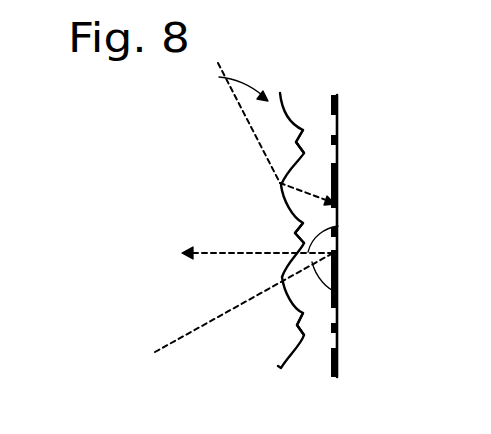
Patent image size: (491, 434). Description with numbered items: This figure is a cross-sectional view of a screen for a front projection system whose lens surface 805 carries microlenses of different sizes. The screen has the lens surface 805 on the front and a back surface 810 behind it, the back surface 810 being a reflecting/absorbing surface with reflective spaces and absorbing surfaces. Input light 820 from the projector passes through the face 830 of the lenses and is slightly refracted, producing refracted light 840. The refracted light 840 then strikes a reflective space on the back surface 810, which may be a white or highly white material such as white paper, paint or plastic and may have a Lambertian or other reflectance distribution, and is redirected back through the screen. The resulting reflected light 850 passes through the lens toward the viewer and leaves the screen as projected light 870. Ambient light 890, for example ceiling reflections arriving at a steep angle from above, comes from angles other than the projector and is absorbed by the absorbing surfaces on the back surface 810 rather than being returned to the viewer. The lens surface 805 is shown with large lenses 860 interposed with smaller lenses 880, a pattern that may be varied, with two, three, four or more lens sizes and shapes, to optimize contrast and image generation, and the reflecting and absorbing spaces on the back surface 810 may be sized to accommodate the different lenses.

The lens surface 805 is at (219, 77).
The back surface 810 is at (338, 180).
The input light 820 is at (187, 341).
The face 830 is at (283, 276).
The refracted light 840 is at (337, 292).
The reflected light 850 is at (338, 226).
The large lenses 860 is at (279, 177).
The projected light 870 is at (209, 256).
The smaller lenses 880 is at (295, 142).
The ambient light 890 is at (224, 72).